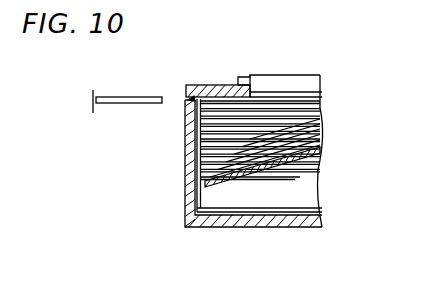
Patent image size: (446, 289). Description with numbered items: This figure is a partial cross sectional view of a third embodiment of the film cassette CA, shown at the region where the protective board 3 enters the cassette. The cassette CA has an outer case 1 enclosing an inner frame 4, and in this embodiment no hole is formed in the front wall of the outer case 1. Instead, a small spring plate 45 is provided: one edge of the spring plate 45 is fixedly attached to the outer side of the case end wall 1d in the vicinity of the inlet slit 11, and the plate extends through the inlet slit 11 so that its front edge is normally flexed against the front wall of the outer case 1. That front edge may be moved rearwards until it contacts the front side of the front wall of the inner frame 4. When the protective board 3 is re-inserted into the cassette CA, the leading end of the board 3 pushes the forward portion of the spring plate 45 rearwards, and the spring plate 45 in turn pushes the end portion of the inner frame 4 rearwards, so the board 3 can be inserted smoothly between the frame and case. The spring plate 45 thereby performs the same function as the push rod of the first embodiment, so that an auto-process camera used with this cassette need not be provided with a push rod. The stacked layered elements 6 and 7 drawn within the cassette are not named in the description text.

The outer case 1 is at (245, 76).
The case end wall 1d is at (192, 202).
The protective board 3 is at (110, 96).
The inner frame 4 is at (303, 90).
The fins 6 is at (300, 125).
The inclined plate 7 is at (295, 158).
The inlet slit 11 is at (190, 97).
The spring plate 45 is at (189, 100).
The cassette CA is at (235, 228).